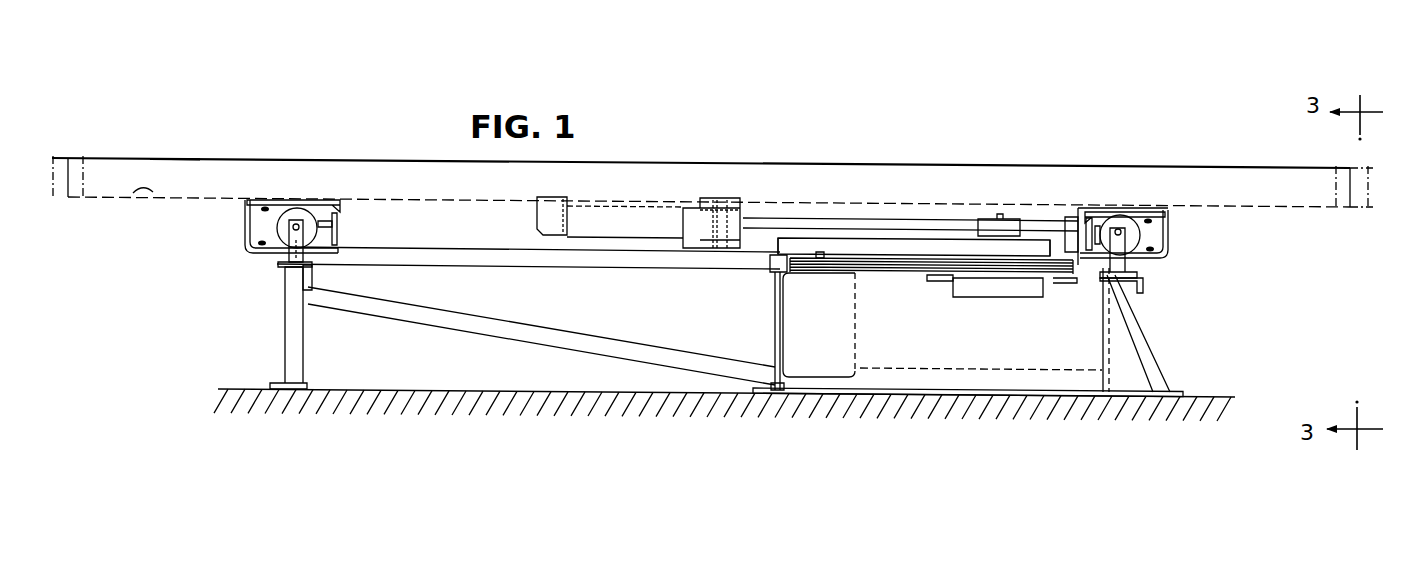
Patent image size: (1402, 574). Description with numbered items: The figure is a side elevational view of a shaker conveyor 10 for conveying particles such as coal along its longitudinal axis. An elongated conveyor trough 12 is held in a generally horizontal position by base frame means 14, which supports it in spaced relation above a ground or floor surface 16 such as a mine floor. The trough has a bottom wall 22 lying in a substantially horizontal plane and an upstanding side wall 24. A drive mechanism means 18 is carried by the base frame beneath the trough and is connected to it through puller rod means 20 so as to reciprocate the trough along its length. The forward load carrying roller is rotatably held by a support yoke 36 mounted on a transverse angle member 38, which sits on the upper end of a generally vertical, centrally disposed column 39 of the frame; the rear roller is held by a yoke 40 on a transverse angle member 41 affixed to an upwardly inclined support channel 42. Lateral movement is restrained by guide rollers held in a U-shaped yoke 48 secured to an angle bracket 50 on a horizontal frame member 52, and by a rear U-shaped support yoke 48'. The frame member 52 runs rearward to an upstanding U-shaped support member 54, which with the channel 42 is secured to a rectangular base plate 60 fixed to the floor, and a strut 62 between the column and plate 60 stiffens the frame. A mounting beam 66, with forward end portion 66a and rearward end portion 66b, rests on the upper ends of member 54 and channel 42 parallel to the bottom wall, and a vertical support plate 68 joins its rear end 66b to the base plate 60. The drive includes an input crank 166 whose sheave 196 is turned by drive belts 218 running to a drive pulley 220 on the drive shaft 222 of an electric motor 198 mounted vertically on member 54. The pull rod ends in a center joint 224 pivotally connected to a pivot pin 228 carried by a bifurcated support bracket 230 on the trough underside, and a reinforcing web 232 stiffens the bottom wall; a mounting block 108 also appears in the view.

The shaker conveyor 10 is at (848, 128).
The conveyor trough 12 is at (368, 161).
The base frame means 14 is at (265, 347).
The ground or floor surface 16 is at (353, 390).
The drive mechanism means 18 is at (957, 306).
The puller rod means 20 is at (836, 223).
The bottom wall surface 22 is at (153, 203).
The side wall 24 is at (174, 172).
The support yoke 36 is at (294, 242).
The transverse angle member 38 is at (313, 277).
The column 39 is at (287, 313).
The yoke 40 is at (1108, 264).
The transverse angle member 41 is at (1143, 291).
The upwardly inclined support channel 42 is at (1140, 341).
The U-shaped yoke 48 is at (367, 220).
The U-shaped support yoke 48' is at (1111, 192).
The angle bracket 50 is at (343, 234).
The horizontal frame member 52 is at (447, 262).
The upstanding U-shaped support member 54 is at (777, 330).
The rectangular plate 60 is at (962, 398).
The strut 62 is at (502, 337).
The mounting beam 66 is at (923, 245).
The forward end portion 66a is at (797, 245).
The rearward end portion 66b is at (1058, 252).
The vertical support plate 68 is at (1104, 350).
The mounting block 108 is at (1068, 218).
The input crank 166 is at (988, 295).
The sheave 196 is at (928, 278).
The electric motor 198 is at (845, 341).
The drive belt 218 is at (893, 263).
The drive pulley 220 is at (785, 260).
The drive shaft 222 is at (818, 252).
The center joint 224 is at (743, 220).
The pivot pin 228 is at (717, 250).
The bifurcated support bracket 230 is at (690, 245).
The reinforcing web 232 is at (612, 227).